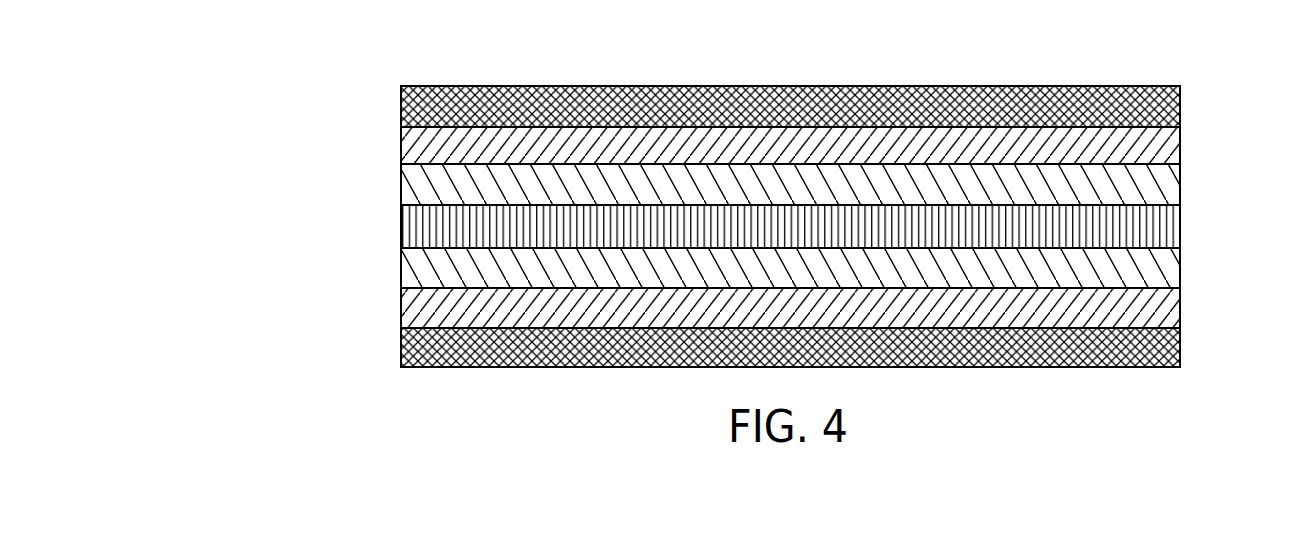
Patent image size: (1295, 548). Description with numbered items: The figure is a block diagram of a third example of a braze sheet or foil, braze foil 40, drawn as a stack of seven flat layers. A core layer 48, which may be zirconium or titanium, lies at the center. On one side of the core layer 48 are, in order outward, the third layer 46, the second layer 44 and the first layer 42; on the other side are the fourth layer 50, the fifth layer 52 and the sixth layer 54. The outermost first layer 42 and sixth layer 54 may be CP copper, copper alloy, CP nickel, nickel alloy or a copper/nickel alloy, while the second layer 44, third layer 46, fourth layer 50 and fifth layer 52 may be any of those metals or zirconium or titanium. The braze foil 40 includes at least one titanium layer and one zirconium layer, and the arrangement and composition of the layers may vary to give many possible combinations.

The braze foil 40 is at (322, 127).
The first layer 42 is at (1172, 107).
The second layer 44 is at (1172, 146).
The third layer 46 is at (1172, 186).
The core layer 48 is at (1172, 229).
The fourth layer 50 is at (1172, 270).
The fifth layer 52 is at (1172, 310).
The sixth layer 54 is at (1172, 348).